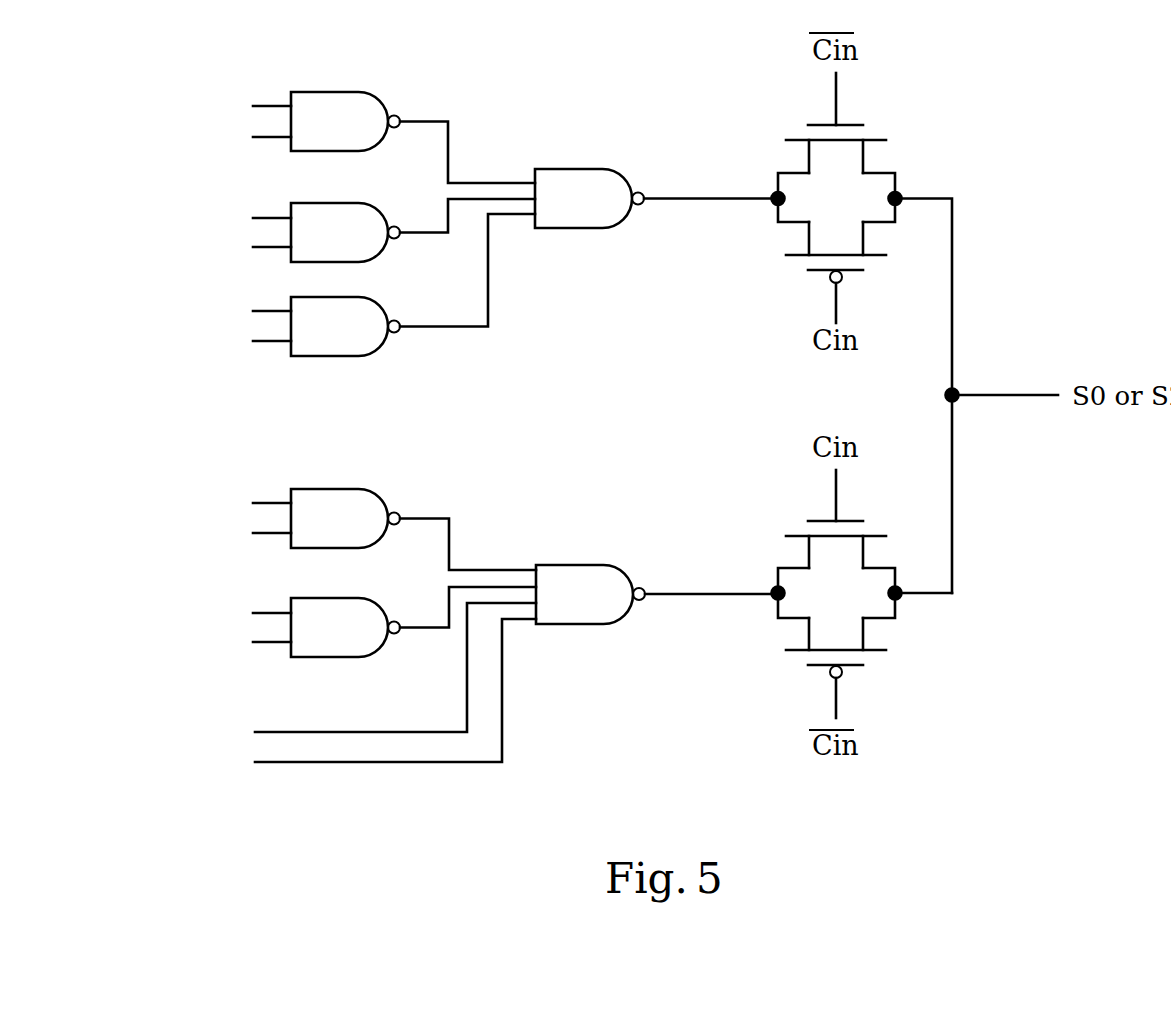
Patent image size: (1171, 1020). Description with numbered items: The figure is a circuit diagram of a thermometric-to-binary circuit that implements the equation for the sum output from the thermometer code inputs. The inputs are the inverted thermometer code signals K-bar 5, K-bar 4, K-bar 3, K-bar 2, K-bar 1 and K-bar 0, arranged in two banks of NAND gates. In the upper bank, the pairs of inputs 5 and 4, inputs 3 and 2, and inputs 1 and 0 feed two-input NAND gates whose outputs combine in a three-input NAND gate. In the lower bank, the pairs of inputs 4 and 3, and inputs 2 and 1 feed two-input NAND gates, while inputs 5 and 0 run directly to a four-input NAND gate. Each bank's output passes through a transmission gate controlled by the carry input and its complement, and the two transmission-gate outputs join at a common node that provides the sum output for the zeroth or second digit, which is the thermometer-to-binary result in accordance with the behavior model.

The inverted carry-select input signal K5 5 is at (238, 704).
The inverted carry-select input signal K4 4 is at (238, 478).
The inverted carry-select input signal K3 3 is at (238, 527).
The inverted carry-select input signal K2 2 is at (238, 587).
The inverted carry-select input signal K1 1 is at (238, 636).
The inverted carry-select input signal K0 0 is at (238, 755).